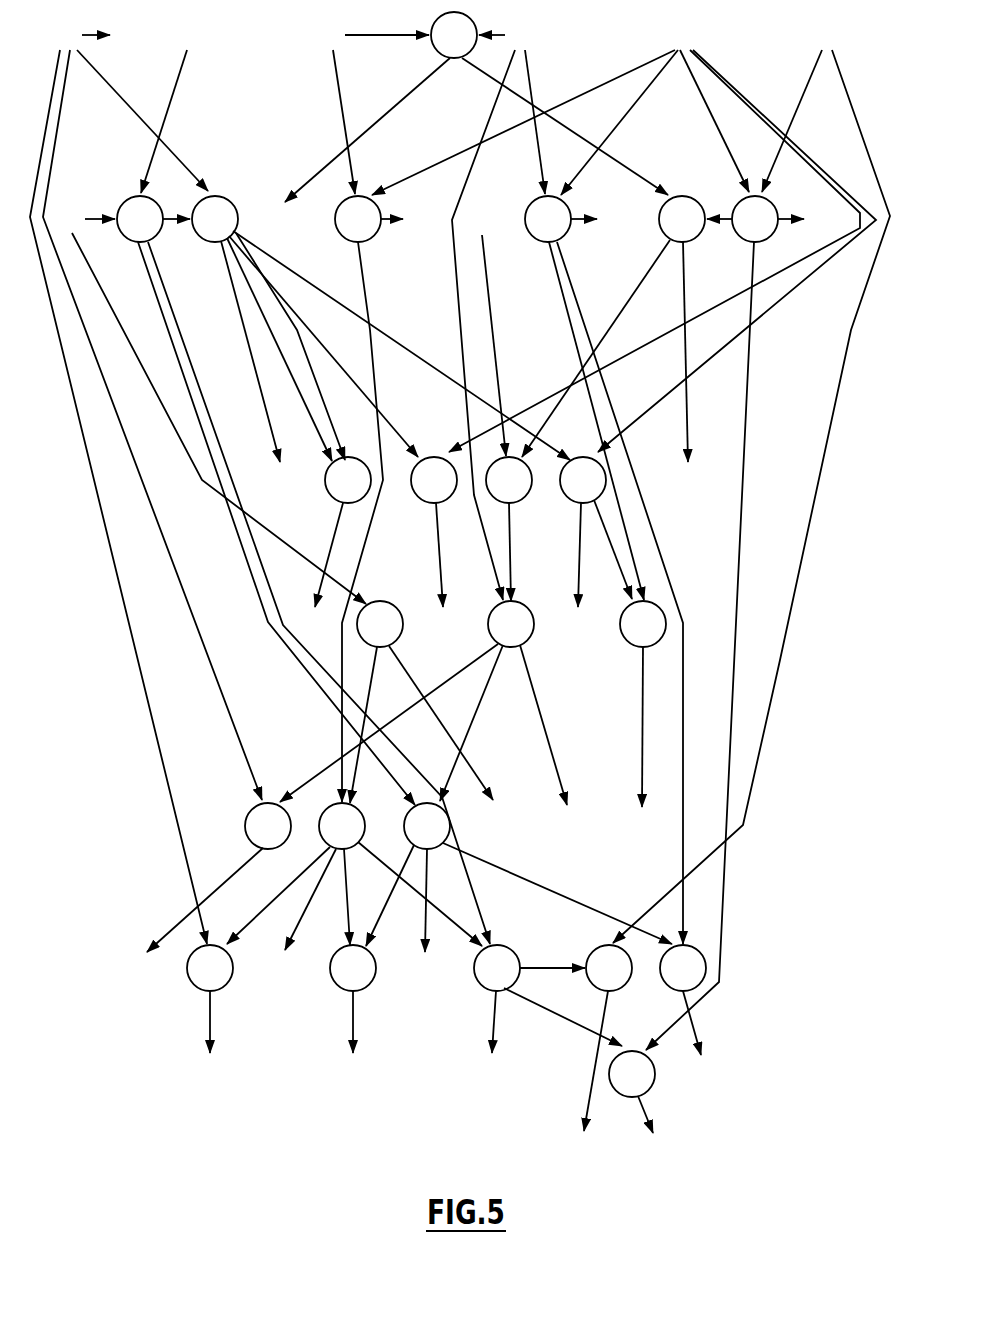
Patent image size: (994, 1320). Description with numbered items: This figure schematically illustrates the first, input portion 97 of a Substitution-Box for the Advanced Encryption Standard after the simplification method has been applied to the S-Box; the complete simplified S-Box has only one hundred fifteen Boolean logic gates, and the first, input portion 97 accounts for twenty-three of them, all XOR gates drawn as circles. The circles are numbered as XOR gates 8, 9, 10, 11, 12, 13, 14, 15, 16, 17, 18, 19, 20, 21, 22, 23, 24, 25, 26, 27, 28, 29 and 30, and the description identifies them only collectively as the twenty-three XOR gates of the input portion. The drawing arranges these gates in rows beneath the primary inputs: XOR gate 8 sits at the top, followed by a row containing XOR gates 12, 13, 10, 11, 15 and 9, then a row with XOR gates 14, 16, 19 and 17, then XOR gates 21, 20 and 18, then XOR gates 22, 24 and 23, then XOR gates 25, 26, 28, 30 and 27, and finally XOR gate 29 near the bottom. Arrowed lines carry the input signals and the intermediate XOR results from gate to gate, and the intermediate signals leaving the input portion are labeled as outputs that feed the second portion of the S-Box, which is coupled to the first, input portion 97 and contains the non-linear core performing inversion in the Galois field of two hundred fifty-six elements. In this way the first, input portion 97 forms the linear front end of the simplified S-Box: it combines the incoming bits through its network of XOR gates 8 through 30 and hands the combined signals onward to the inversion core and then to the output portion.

The first, input portion 97 is at (117, 831).
The instruction node 8 is at (454, 35).
The instruction node 9 is at (755, 219).
The instruction node 10 is at (358, 219).
The instruction node 11 is at (548, 219).
The instruction node 12 is at (140, 219).
The instruction node 13 is at (215, 219).
The instruction node 14 is at (348, 480).
The instruction node 15 is at (682, 219).
The instruction node 16 is at (434, 480).
The instruction node 17 is at (583, 480).
The instruction node 18 is at (643, 624).
The instruction node 19 is at (509, 480).
The instruction node 20 is at (511, 624).
The instruction node 21 is at (380, 624).
The instruction node 22 is at (268, 826).
The instruction node 23 is at (427, 826).
The instruction node 24 is at (342, 826).
The instruction node 25 is at (210, 968).
The instruction node 26 is at (353, 968).
The instruction node 27 is at (683, 968).
The instruction node 28 is at (497, 968).
The instruction node 29 is at (632, 1074).
The instruction node 30 is at (609, 968).